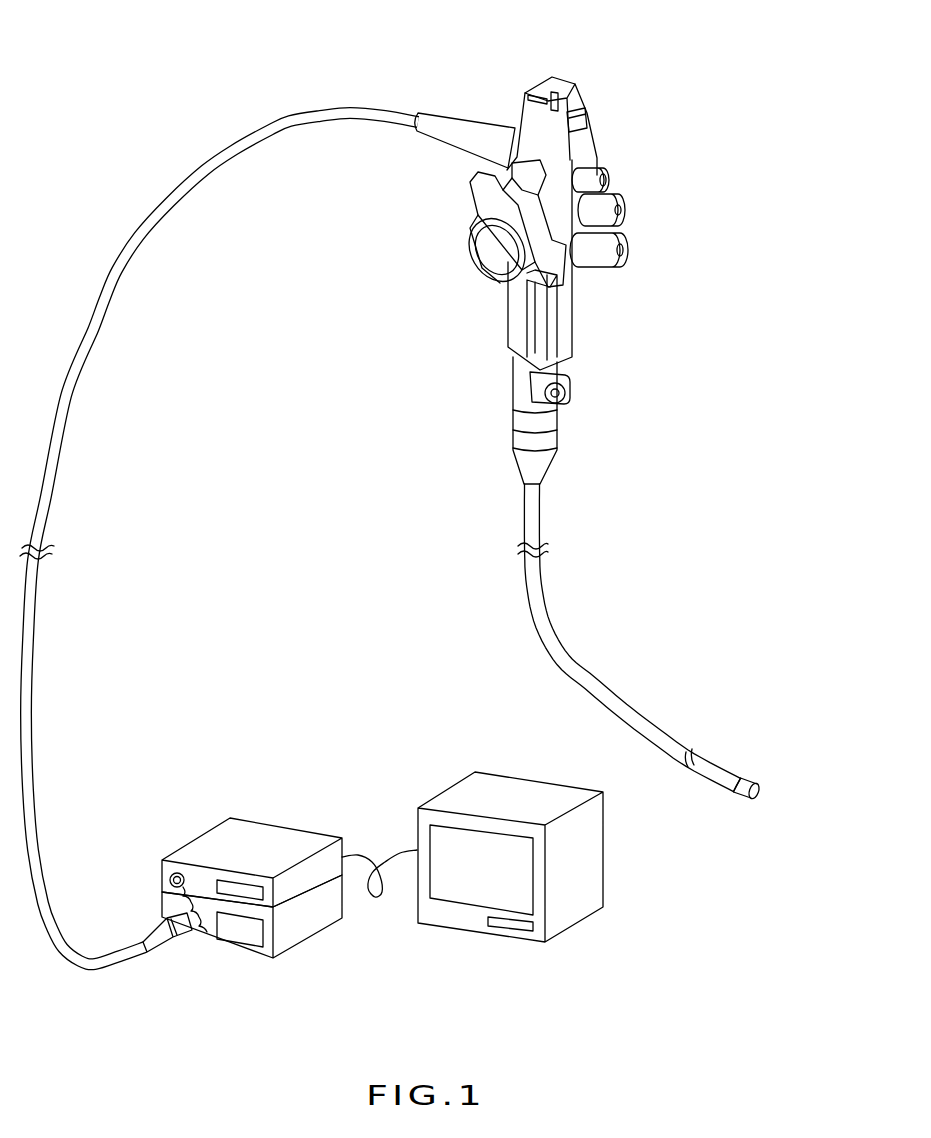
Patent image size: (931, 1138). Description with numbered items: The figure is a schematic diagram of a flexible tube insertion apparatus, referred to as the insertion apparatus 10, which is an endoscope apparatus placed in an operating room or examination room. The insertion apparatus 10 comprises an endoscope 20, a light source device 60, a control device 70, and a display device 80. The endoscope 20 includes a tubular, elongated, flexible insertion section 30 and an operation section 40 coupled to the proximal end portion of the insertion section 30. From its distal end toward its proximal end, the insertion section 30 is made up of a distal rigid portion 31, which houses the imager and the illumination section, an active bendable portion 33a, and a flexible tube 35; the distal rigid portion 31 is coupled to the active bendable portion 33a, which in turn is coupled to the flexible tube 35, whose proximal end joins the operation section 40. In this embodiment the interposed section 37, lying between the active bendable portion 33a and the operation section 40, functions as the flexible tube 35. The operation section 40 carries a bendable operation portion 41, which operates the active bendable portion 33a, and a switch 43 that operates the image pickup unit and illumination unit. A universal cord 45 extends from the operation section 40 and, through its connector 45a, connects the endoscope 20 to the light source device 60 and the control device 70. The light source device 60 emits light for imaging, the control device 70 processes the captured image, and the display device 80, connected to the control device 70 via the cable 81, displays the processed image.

The insertion apparatus 10 is at (152, 78).
The endoscope 20 is at (694, 333).
The insertion section 30 is at (571, 494).
The distal rigid portion 31 is at (750, 776).
The active bendable portion 33a is at (715, 755).
The flexible tube 35 is at (629, 638).
The interposed section 37 is at (541, 520).
The operation section 40 is at (493, 319).
The bendable operation portion 41 is at (458, 215).
The switch 43 is at (597, 75).
The universal cord 45 is at (133, 233).
The connector 45a is at (198, 952).
The light source device 60 is at (303, 928).
The control device 70 is at (262, 836).
The display device 80 is at (590, 864).
The cable 81 is at (387, 895).